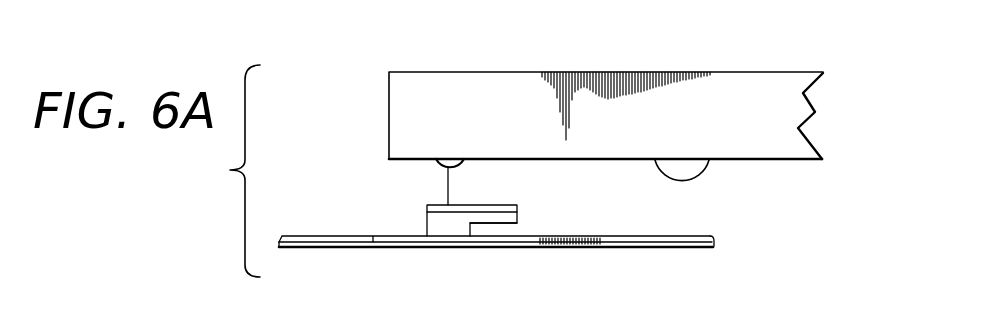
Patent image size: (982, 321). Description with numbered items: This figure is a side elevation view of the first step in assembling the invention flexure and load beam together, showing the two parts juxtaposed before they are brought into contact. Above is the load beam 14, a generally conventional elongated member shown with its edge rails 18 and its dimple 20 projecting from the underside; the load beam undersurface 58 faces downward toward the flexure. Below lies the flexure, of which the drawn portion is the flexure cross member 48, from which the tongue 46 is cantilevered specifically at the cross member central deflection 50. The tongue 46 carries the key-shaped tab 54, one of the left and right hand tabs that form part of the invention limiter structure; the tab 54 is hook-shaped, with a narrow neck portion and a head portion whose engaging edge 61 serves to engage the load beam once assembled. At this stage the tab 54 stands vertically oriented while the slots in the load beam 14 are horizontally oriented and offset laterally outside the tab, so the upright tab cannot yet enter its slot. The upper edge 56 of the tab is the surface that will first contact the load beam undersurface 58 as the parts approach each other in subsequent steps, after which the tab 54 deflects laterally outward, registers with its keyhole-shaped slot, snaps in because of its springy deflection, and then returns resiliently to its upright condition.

The load beam 14 is at (787, 72).
The edge rails 18 is at (772, 118).
The dimple 20 is at (458, 170).
The tongue 46 is at (673, 235).
The flexure cross member 48 is at (279, 250).
The cross member central deflection 50 is at (343, 235).
The tab 54 is at (518, 214).
The upper edge of the tabs 56 is at (501, 206).
The load beam undersurface 58 is at (707, 167).
The engaging edge 61 is at (500, 226).